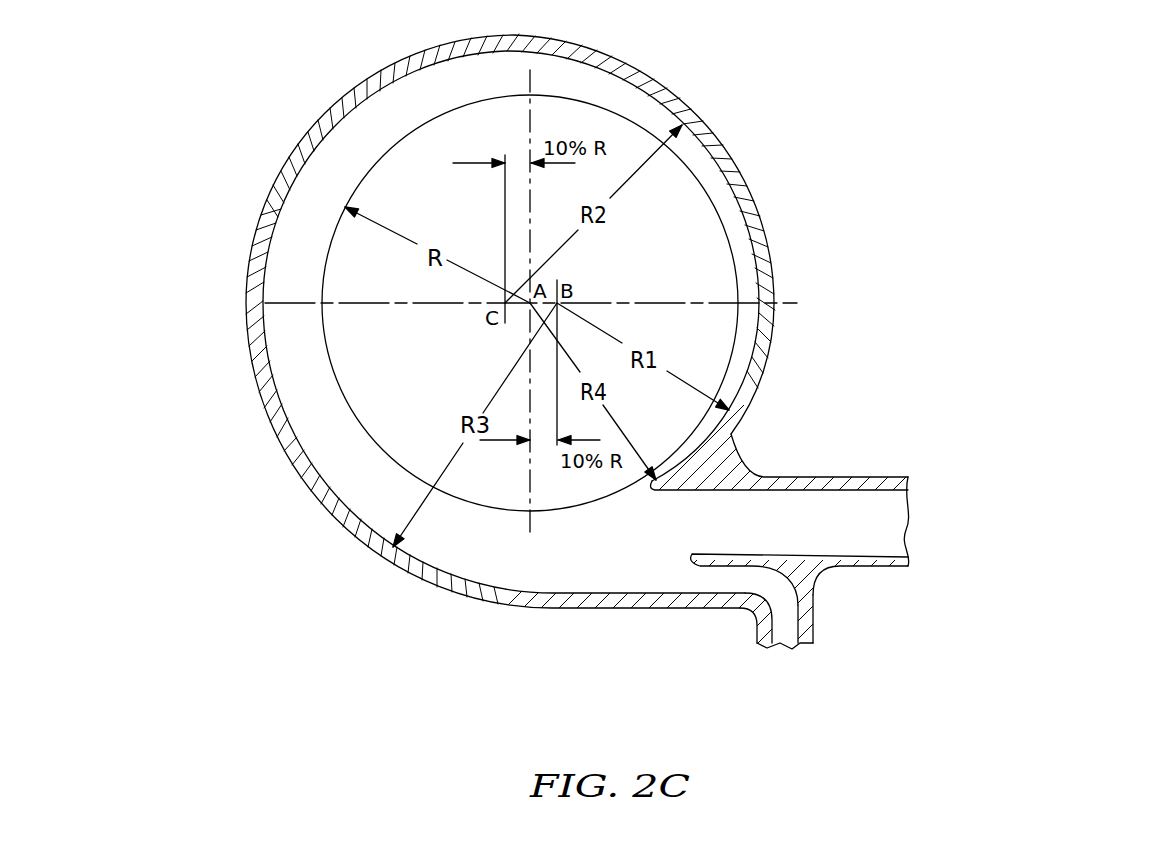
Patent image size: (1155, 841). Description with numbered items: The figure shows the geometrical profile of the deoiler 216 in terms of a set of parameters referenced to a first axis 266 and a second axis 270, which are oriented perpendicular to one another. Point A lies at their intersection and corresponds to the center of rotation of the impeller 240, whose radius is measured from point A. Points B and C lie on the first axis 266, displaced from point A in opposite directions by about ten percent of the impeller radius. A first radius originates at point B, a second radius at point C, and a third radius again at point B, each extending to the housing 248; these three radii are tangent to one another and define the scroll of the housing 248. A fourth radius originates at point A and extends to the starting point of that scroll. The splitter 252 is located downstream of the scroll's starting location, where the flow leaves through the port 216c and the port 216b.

The deoiler 216 is at (866, 144).
The housing 248 is at (333, 106).
The impeller 240 is at (733, 252).
The first axis 266 is at (780, 304).
The port 216c is at (887, 525).
The port 216b is at (787, 623).
The splitter 252 is at (697, 566).
The second axis 270 is at (526, 316).